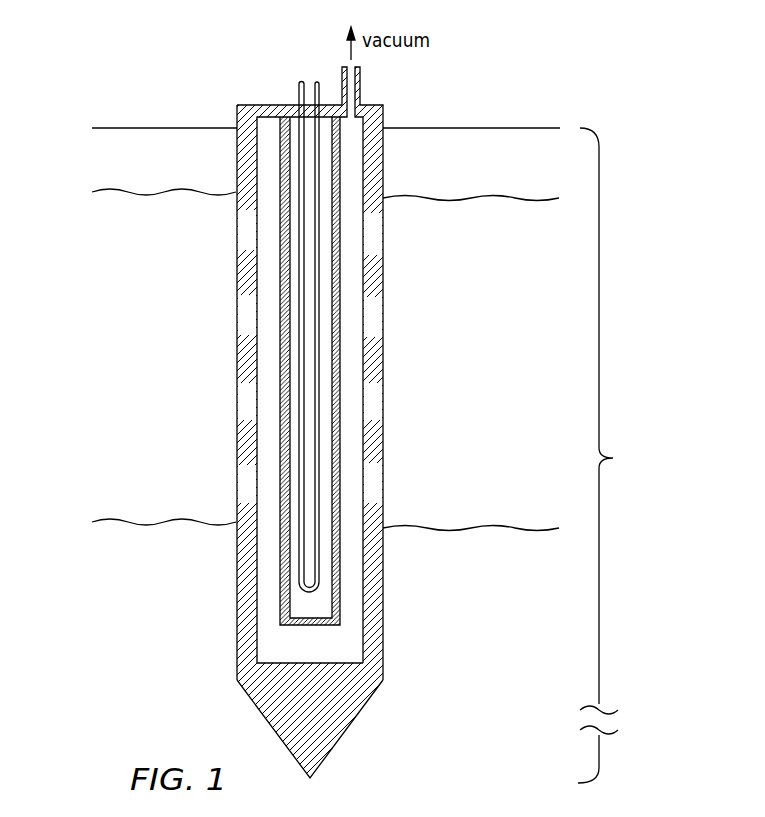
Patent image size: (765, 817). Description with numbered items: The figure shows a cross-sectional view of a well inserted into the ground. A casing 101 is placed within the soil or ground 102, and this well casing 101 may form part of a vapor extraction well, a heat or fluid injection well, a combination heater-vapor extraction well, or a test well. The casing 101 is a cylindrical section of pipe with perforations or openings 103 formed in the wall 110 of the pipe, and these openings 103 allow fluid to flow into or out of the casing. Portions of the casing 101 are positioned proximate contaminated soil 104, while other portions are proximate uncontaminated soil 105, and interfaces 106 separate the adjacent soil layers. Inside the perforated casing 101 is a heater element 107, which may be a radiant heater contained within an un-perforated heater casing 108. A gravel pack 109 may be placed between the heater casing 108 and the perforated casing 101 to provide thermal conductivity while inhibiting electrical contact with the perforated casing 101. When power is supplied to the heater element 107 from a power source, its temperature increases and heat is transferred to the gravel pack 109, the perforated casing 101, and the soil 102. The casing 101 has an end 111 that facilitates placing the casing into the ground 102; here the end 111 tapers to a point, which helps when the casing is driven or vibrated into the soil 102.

The casing 101 is at (170, 387).
The soil or ground 102 is at (614, 455).
The perforations or openings 103 is at (250, 233).
The contaminated soil 104 is at (133, 309).
The uncontaminated soil 105 is at (137, 166).
The interfaces 106 is at (458, 198).
The heater element 107 is at (300, 95).
The heater casing 108 is at (283, 140).
The gravel pack 109 is at (280, 650).
The wall 110 is at (237, 588).
The end 111 is at (363, 707).